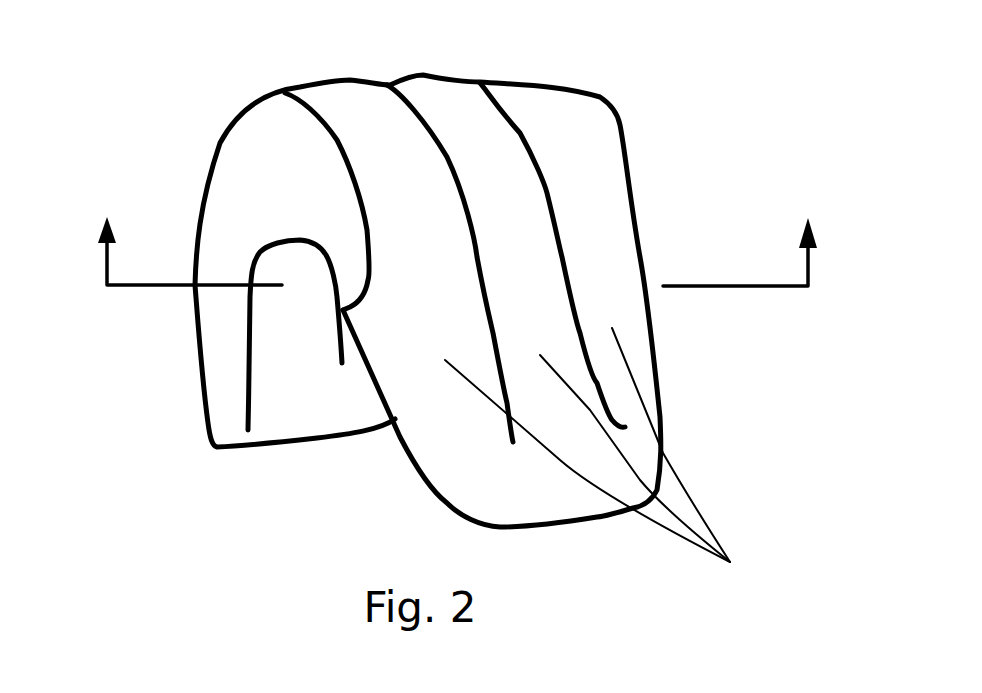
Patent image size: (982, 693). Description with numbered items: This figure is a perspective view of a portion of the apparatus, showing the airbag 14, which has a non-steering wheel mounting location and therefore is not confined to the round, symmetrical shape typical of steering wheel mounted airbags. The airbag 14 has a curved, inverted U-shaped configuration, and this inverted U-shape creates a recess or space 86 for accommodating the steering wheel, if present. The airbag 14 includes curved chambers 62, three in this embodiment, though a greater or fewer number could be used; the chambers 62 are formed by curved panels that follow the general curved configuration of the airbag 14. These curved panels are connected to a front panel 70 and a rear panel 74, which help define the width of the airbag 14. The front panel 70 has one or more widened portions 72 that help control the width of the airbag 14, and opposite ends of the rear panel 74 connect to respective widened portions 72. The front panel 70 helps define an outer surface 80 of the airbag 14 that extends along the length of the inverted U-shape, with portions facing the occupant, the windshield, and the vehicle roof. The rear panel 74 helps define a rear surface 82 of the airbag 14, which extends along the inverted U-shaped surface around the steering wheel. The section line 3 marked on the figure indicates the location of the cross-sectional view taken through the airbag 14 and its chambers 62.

The airbag 14 is at (162, 80).
The front panel 70 is at (502, 173).
The outer surface 80 is at (602, 227).
The widened portions 72 is at (200, 370).
The rear panel 74 is at (355, 410).
The rear surface 82 is at (297, 370).
The recess or space 86 is at (326, 418).
The chambers 62 is at (604, 461).
The section line 3- 3 is at (457, 234).